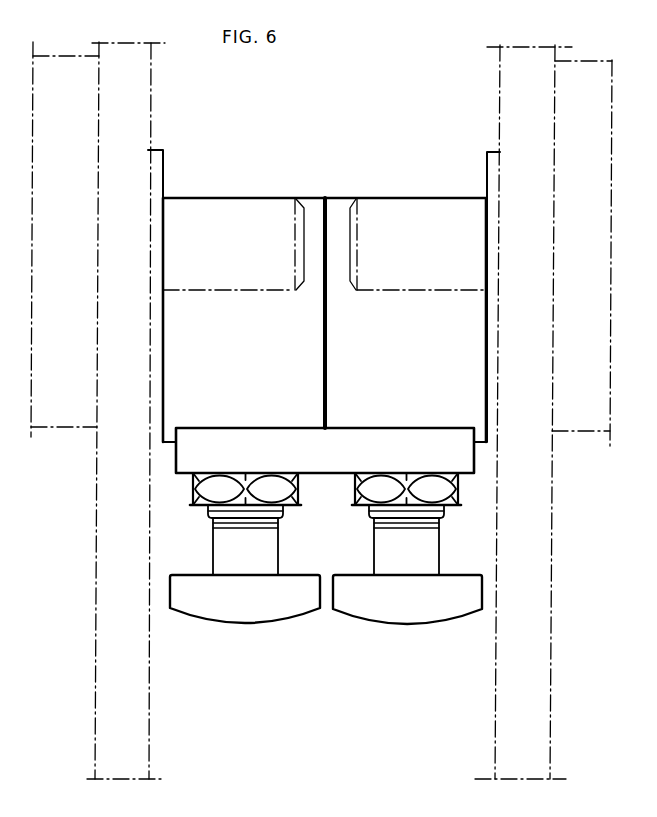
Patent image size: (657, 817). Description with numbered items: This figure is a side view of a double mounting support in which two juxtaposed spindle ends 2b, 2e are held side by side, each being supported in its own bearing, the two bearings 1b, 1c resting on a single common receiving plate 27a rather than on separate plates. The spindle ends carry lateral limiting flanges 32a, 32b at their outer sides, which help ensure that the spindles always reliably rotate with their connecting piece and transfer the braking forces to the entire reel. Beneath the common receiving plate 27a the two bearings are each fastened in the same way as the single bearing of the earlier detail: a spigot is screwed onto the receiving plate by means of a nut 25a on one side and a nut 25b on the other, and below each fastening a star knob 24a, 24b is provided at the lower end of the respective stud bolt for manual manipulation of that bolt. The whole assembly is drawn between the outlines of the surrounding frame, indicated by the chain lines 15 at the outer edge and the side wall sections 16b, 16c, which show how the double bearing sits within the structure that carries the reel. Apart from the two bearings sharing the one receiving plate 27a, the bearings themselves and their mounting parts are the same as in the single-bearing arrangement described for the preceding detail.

The frame / housing outline 15 is at (585, 77).
The wall section of housing 16b is at (137, 737).
The wall section of housing 16c is at (540, 708).
The lateral limiting flange 32a is at (163, 160).
The lateral limiting flange 32b is at (486, 163).
The spindle end 2b is at (229, 210).
The body half / block 2e is at (428, 210).
The bearing 1b is at (316, 207).
The bearing 1c is at (340, 207).
The common receiving plate 27a is at (462, 468).
The adjusting bolt with nut 25a is at (285, 495).
The adjusting bolt with nut 25b is at (445, 497).
The foot / support pad 24a is at (237, 618).
The foot / support pad 24b is at (428, 617).